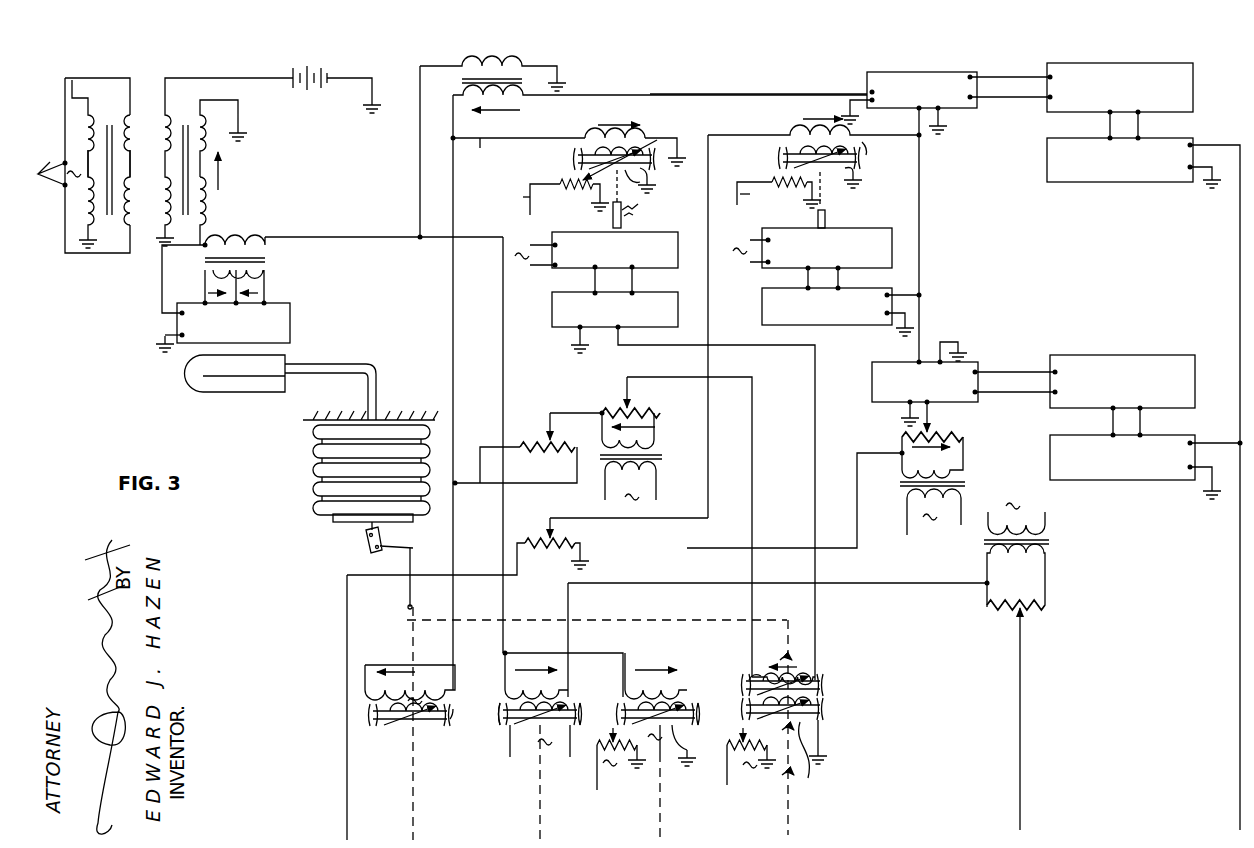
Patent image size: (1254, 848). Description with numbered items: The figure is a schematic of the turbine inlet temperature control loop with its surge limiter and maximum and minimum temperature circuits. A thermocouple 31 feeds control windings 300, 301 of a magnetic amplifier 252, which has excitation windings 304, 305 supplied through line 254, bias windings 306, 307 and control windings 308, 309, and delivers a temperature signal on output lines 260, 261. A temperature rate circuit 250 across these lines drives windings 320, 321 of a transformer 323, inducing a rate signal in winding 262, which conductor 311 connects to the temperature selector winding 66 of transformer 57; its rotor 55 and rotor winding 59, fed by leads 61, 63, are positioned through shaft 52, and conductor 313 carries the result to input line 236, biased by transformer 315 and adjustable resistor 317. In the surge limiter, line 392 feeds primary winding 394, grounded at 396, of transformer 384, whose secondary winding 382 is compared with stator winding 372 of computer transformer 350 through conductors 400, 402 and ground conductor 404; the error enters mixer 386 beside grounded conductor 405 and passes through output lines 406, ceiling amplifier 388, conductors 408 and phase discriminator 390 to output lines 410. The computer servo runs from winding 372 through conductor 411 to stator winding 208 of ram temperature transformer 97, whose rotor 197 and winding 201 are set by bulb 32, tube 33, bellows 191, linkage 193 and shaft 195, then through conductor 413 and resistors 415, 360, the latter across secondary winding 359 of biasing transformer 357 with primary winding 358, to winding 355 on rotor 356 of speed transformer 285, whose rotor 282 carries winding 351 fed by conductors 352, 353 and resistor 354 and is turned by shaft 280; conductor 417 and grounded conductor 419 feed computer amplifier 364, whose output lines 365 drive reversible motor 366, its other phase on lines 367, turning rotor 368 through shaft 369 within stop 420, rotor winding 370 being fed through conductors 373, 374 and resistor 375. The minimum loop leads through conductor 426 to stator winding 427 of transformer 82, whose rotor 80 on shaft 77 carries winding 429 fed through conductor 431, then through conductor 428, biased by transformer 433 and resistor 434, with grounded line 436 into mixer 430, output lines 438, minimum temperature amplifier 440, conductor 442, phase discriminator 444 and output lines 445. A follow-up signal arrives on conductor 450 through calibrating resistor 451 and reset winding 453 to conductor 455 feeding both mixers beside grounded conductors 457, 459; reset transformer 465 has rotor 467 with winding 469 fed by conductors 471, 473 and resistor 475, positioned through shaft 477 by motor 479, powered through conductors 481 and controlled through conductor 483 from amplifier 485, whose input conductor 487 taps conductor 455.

The thermocouple 31 is at (45, 158).
The bulb 32 is at (237, 384).
The tube 33 is at (360, 364).
The shaft 52 is at (540, 807).
The rotor 55 is at (506, 716).
The inductive transformer 57 is at (556, 701).
The rotor winding 59 is at (570, 730).
The lead 61 is at (508, 752).
The lead 63 is at (575, 735).
The second stator winding 66 is at (517, 690).
The shaft 77 is at (660, 806).
The rotor 80 is at (700, 715).
The speed responsive variable coupling transformer 82 is at (690, 700).
The ram temperature responsive variable coupling transformer 97 is at (456, 708).
The bellows 191 is at (313, 484).
The linkage 193 is at (363, 544).
The shaft 195 is at (412, 585).
The rotor 197 is at (368, 716).
The rotor winding 201 is at (408, 725).
The second stator winding 208 is at (423, 685).
The input line 236 is at (1020, 690).
The electronic rate circuit 250 is at (292, 316).
The magnetic amplifier 252 is at (106, 256).
The line 254 is at (74, 82).
The output line 260 is at (238, 104).
The output line 261 is at (207, 244).
The winding 262 is at (268, 251).
The shaft 280 is at (790, 806).
The rotor member 282 is at (830, 712).
The speed responsive variable coupling transformer 285 is at (836, 692).
The control winding 300 is at (132, 112).
The control winding 301 is at (126, 220).
The excitation winding 304 is at (90, 108).
The excitation winding 305 is at (84, 206).
The D. C. bias winding 306 is at (170, 124).
The D. C. bias winding 307 is at (160, 218).
The control winding 308 is at (213, 136).
The control winding 309 is at (214, 202).
The conductor 311 is at (358, 236).
The conductor 313 is at (848, 588).
The transformer 315 is at (1058, 541).
The resistor 317 is at (1025, 610).
The winding 320 is at (212, 270).
The winding 321 is at (266, 272).
The transformer 323 is at (273, 266).
The computer variable coupling transformer 350 is at (572, 147).
The winding 351 is at (814, 756).
The conductor 352 is at (823, 735).
The conductor 353 is at (727, 772).
The resistor 354 is at (750, 776).
The winding 355 is at (805, 670).
The second rotor element 356 is at (82, 234).
The transformer 357 is at (665, 458).
The primary winding 358 is at (652, 474).
The secondary winding 359 is at (649, 442).
The calibrating resistor 360 is at (632, 410).
The computer amplifier 364 is at (650, 294).
The output lines 365 is at (632, 281).
The two phase reversible motor 366 is at (680, 250).
The lines 367 is at (540, 258).
The rotor 368 is at (591, 177).
The shaft 369 is at (612, 212).
The winding 370 is at (637, 175).
The stator winding 372 is at (600, 136).
The conductor 373 is at (652, 179).
The conductor 374 is at (507, 200).
The resistor 375 is at (574, 201).
The secondary winding 382 is at (520, 100).
The transformer 384 is at (460, 86).
The mixer circuit 386 is at (918, 70).
The ceiling amplifier 388 is at (1100, 63).
The phase discriminator 390 is at (1130, 182).
The line 392 is at (412, 134).
The primary winding 394 is at (507, 65).
The ground 396 is at (560, 71).
The conductor 400 is at (655, 92).
The conductor 402 is at (518, 154).
The conductor 404 is at (662, 134).
The grounded input conductor 405 is at (860, 110).
The output lines 406 is at (1013, 76).
The output conductors 408 is at (1137, 126).
The output lines 410 is at (1213, 145).
The conductor 411 is at (455, 318).
The conductor 413 is at (486, 445).
The resistor 415 is at (548, 438).
The conductor 417 is at (817, 447).
The amplifier input conductor 419 is at (588, 347).
The mechanical stop 420 is at (640, 213).
The conductor 426 is at (588, 653).
The stator winding 427 is at (680, 692).
The conductor 428 is at (938, 410).
The rotor winding 429 is at (660, 757).
The mixer circuit 430 is at (874, 362).
The conductor 431 is at (597, 763).
The transformer 433 is at (966, 482).
The resistor 434 is at (965, 437).
The grounded input line 436 is at (908, 412).
The output lines 438 is at (1015, 392).
The minimum temperature amplifier 440 is at (1118, 355).
The output conductor 442 is at (1140, 416).
The phase discriminator 444 is at (1127, 480).
The output lines 445 is at (1200, 443).
The conductor 450 is at (347, 662).
The calibrating resistor element 451 is at (563, 538).
The temperature reset winding 453 is at (790, 132).
The input conductor 455 is at (921, 179).
The grounded conductor 457 is at (948, 120).
The grounded conductor 459 is at (967, 327).
The temperature reset transformer 465 is at (856, 141).
The rotor element 467 is at (787, 155).
The winding 469 is at (841, 190).
The conductor 471 is at (763, 195).
The conductor 473 is at (858, 176).
The adjustable resistor element 475 is at (773, 177).
The shaft 477 is at (816, 219).
The actuator motor 479 is at (893, 236).
The conductors 481 is at (756, 262).
The conductor 483 is at (838, 278).
The amplifier 485 is at (763, 325).
The conductor 487 is at (906, 318).